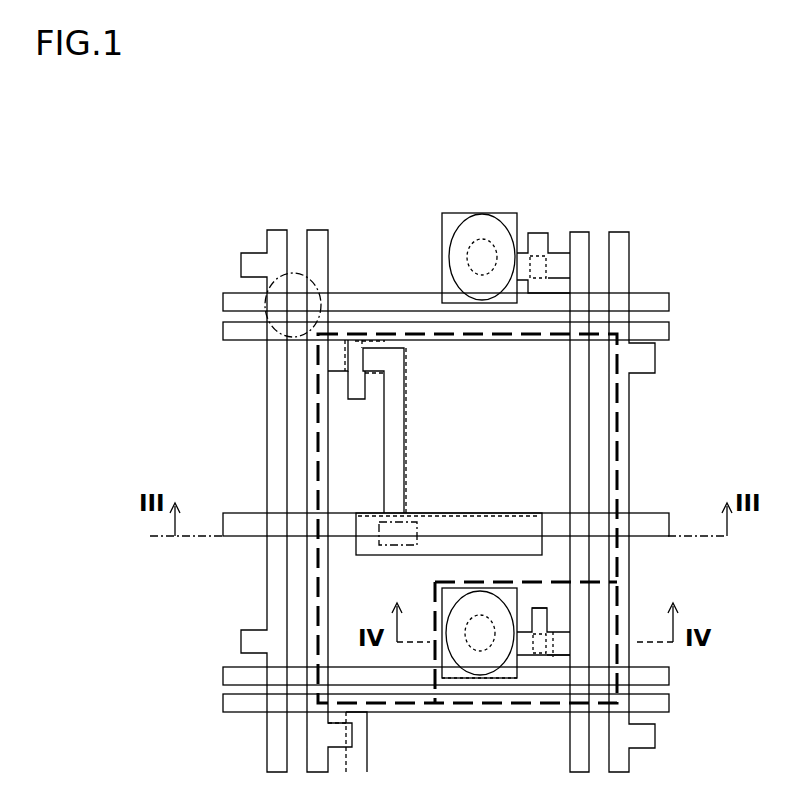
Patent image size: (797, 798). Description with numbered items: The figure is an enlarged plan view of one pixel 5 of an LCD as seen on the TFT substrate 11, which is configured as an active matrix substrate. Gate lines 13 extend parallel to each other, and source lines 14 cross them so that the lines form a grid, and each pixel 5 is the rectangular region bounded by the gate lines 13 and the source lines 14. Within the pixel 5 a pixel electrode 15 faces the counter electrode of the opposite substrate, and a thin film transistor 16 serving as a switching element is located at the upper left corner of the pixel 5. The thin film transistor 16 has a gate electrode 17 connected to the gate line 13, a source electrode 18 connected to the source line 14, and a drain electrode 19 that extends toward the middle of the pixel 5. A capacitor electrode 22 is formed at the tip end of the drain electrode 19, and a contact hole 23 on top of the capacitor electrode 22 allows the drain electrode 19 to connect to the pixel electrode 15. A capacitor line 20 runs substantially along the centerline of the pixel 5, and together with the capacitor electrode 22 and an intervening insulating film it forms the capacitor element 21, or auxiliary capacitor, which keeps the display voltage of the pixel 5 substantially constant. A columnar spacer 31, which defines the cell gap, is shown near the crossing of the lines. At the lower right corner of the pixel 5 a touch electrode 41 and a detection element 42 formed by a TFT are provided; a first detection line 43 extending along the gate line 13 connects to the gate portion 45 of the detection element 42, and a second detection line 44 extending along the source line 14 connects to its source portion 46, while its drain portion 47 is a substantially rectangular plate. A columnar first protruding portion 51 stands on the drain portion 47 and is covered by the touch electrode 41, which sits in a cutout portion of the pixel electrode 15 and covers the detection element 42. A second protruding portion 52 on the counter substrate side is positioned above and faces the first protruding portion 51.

The TFT substrate 11 is at (140, 203).
The pixel 5 is at (428, 355).
The gate line 13 is at (232, 332).
The source line 14 is at (318, 229).
The pixel electrode 15 is at (622, 433).
The thin film transistor 16 is at (407, 368).
The gate electrode 17 is at (356, 387).
The source electrode 18 is at (340, 338).
The drain electrode 19 is at (388, 345).
The capacitor line 20 is at (240, 522).
The capacitor element 21 is at (430, 490).
The capacitor electrode 22 is at (530, 520).
The contact hole 23 is at (410, 538).
The columnar spacer 31 is at (266, 272).
The touch electrode 41 is at (458, 712).
The detection element 42 is at (538, 220).
The first detection line 43 is at (232, 300).
The second detection line 44 is at (277, 229).
The gate portion 45 is at (541, 609).
The source portion 46 is at (553, 639).
The drain portion 47 is at (497, 213).
The first protruding portion 51 is at (448, 240).
The second protruding portion 52 is at (470, 243).